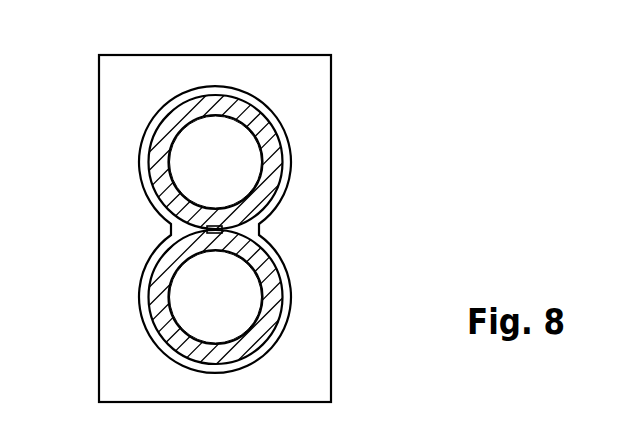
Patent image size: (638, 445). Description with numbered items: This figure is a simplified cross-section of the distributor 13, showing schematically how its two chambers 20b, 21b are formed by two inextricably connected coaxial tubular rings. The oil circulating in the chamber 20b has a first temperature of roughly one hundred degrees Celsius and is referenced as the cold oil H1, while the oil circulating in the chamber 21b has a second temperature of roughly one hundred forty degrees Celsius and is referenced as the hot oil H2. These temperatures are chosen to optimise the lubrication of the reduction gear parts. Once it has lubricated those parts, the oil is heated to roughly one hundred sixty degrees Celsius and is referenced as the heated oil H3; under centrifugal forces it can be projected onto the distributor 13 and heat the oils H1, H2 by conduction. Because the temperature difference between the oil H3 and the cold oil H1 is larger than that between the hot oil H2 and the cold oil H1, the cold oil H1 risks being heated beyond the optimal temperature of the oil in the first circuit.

The distributor 13 is at (346, 152).
The chamber 20b is at (258, 124).
The chamber 21b is at (262, 272).
The cold oil H1 is at (190, 164).
The hot oil H2 is at (188, 311).
The heated oil H3 is at (150, 272).